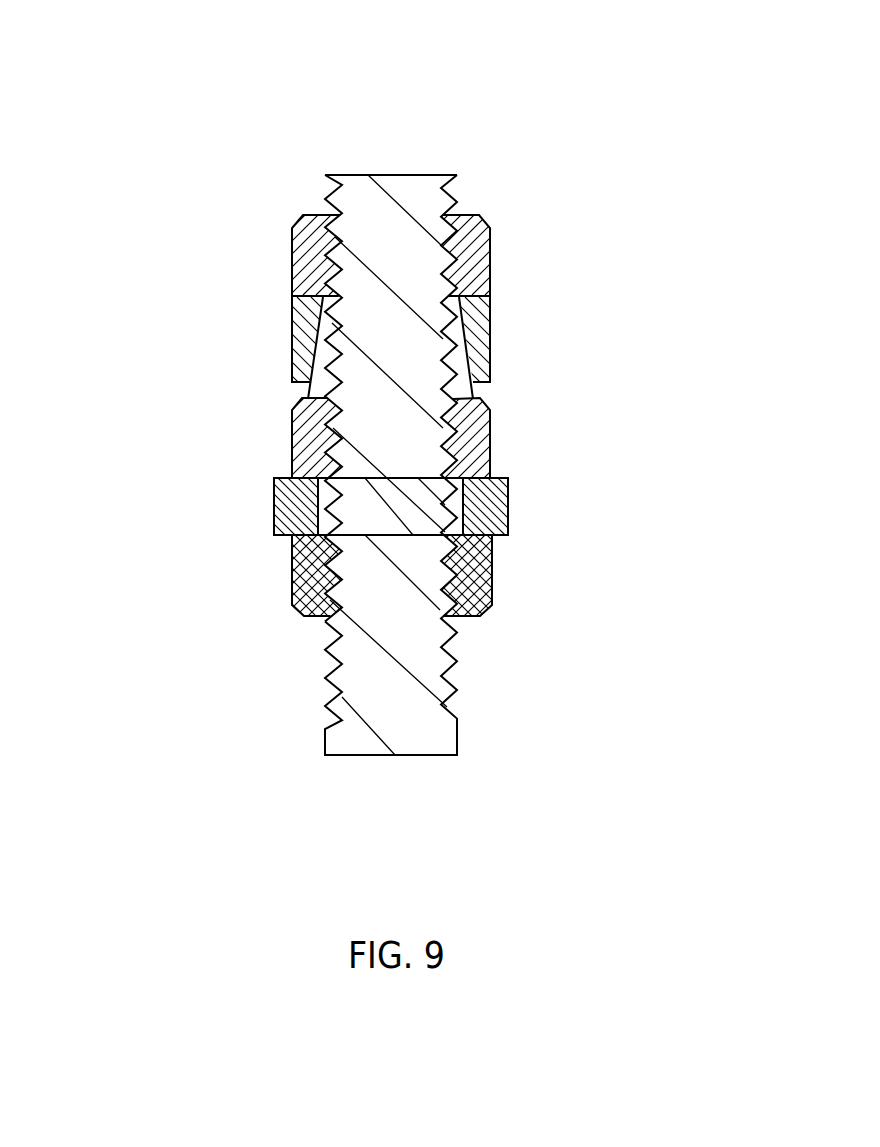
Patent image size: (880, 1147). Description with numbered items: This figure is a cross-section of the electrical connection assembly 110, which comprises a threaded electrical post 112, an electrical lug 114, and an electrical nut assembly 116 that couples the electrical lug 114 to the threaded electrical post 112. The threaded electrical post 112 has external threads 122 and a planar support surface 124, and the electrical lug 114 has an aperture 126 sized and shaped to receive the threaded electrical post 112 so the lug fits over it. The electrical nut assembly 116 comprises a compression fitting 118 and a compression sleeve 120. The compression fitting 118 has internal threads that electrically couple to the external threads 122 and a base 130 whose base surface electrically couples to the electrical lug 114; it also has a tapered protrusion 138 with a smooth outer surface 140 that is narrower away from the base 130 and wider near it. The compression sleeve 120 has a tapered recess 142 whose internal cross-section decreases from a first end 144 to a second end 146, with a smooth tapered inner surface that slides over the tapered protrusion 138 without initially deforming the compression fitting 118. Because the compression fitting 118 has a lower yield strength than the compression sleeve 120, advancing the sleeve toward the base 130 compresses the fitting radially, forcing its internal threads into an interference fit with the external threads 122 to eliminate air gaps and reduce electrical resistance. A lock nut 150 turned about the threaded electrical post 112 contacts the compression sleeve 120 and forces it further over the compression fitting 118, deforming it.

The electrical connection assembly 110 is at (265, 132).
The threaded electrical post 112 is at (365, 703).
The electrical lug 114 is at (272, 493).
The electrical nut assembly 116 is at (268, 278).
The compression fitting 118 is at (293, 415).
The compression sleeve 120 is at (292, 333).
The external threads 122 is at (447, 672).
The planar support surface 124 is at (490, 540).
The aperture 126 is at (322, 512).
The base 130 is at (510, 503).
The tapered protrusion 138 is at (472, 392).
The smooth outer surface 140 is at (300, 395).
The tapered recess 142 is at (455, 316).
The first end 144 is at (503, 372).
The second end 146 is at (506, 297).
The lock nut 150 is at (293, 223).